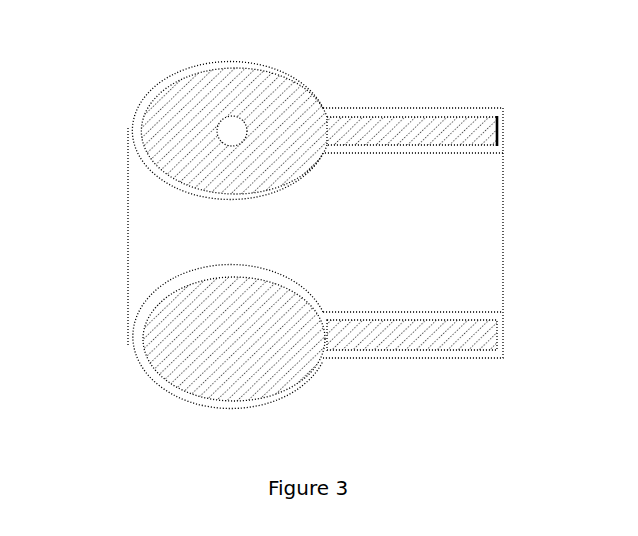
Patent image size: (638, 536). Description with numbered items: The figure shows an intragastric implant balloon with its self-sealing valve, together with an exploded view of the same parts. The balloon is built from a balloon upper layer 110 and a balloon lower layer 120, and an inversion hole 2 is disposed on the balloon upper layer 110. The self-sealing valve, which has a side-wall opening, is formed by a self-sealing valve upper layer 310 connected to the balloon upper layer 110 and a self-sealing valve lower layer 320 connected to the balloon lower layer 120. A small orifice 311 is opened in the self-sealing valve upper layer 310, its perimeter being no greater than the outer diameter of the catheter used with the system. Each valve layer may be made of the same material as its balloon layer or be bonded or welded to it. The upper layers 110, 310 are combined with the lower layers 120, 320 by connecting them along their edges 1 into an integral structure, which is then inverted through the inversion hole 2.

The edges 1 is at (315, 240).
The inversion hole 2 is at (212, 78).
The balloon upper layer 110 is at (165, 107).
The balloon lower layer 120 is at (180, 382).
The self-sealing valve upper layer 310 is at (473, 102).
The small orifice 311 is at (401, 123).
The self-sealing valve lower layer 320 is at (468, 305).